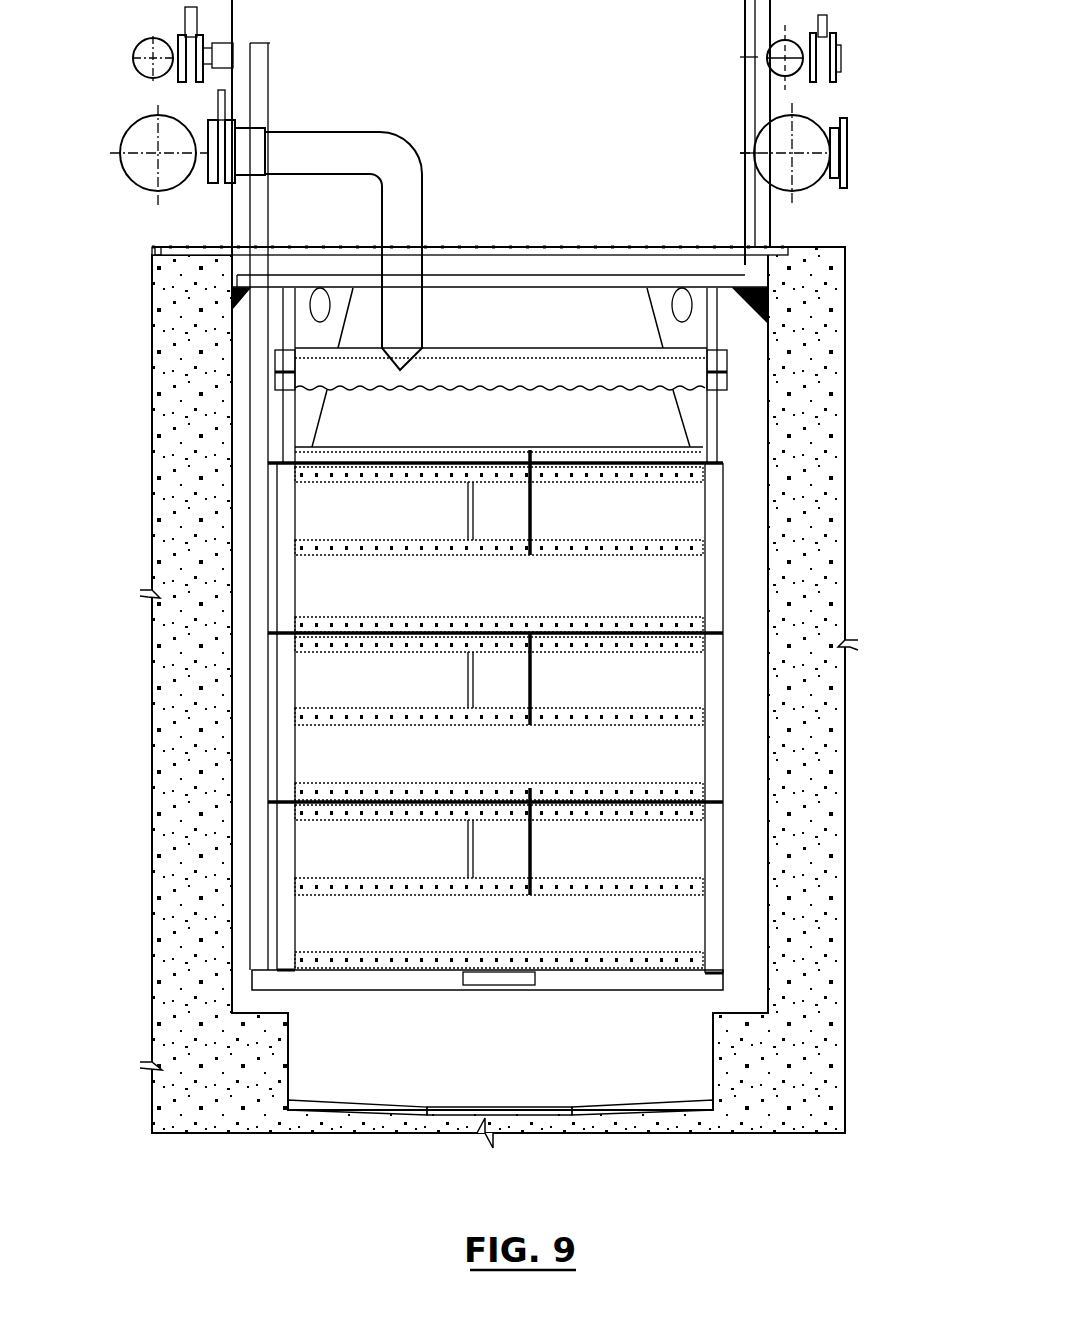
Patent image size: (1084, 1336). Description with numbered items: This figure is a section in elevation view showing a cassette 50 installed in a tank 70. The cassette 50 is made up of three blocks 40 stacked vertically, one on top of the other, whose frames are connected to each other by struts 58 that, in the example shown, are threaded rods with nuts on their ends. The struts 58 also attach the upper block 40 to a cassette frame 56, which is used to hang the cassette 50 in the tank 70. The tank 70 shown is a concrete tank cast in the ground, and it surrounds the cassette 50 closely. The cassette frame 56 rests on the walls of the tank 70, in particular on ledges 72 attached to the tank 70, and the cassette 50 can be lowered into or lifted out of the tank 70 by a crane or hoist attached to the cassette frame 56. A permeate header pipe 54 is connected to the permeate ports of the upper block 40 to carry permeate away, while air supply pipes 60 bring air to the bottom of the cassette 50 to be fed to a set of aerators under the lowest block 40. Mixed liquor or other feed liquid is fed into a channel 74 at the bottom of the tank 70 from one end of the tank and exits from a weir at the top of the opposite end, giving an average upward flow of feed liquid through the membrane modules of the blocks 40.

The block 40 is at (638, 582).
The cassette 50 is at (106, 896).
The permeate header pipe 54 is at (693, 368).
The cassette frame 56 is at (683, 283).
The struts 58 is at (532, 512).
The air supply pipes 60 is at (270, 80).
The tank 70 is at (802, 980).
The ledges 72 is at (768, 300).
The channel 74 is at (655, 1090).